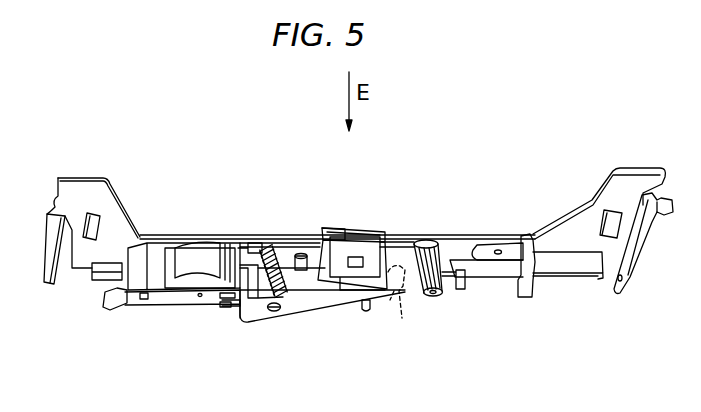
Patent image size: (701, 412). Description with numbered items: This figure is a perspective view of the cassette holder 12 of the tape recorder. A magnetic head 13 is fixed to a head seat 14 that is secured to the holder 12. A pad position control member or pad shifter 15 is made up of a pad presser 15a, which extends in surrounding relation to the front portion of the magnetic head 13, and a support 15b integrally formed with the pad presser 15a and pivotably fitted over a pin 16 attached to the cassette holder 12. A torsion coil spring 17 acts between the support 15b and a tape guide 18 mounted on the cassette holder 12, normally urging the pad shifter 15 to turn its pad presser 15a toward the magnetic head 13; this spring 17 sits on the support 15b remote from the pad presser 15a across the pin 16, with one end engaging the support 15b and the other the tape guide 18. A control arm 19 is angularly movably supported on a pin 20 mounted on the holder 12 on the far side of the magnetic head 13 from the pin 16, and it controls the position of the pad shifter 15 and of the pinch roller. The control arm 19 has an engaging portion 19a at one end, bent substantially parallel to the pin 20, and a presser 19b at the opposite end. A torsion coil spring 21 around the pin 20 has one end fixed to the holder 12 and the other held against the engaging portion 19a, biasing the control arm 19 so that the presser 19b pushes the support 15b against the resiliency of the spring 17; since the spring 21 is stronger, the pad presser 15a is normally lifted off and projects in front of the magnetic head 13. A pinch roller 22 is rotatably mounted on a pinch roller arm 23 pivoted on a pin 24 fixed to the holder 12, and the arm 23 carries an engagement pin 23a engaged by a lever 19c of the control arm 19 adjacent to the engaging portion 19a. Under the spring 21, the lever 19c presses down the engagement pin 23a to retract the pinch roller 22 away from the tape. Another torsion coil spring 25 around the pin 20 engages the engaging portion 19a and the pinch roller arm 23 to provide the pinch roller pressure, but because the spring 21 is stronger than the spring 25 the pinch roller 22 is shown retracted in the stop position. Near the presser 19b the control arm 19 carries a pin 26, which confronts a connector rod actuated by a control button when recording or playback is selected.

The cassette holder 12 is at (640, 182).
The magnetic head 13 is at (372, 257).
The head seat 14 is at (302, 250).
The pad shifter 15 is at (365, 233).
The pad presser 15a is at (345, 228).
The support 15b is at (425, 252).
The pin 16 is at (434, 297).
The torsion coil spring 17 is at (462, 290).
The tape guide 18 is at (526, 296).
The control arm 19 is at (312, 303).
The engaging portion 19a is at (245, 268).
The presser 19b is at (405, 295).
The lever 19c is at (232, 306).
The pin 20 is at (276, 312).
The torsion coil spring 21 is at (278, 258).
The pinch roller 22 is at (203, 250).
The pinch roller arm 23 is at (173, 300).
The engagement pin 23a is at (223, 307).
The pin 24 is at (145, 303).
The torsion coil spring 25 is at (256, 300).
The pin 26 is at (367, 312).